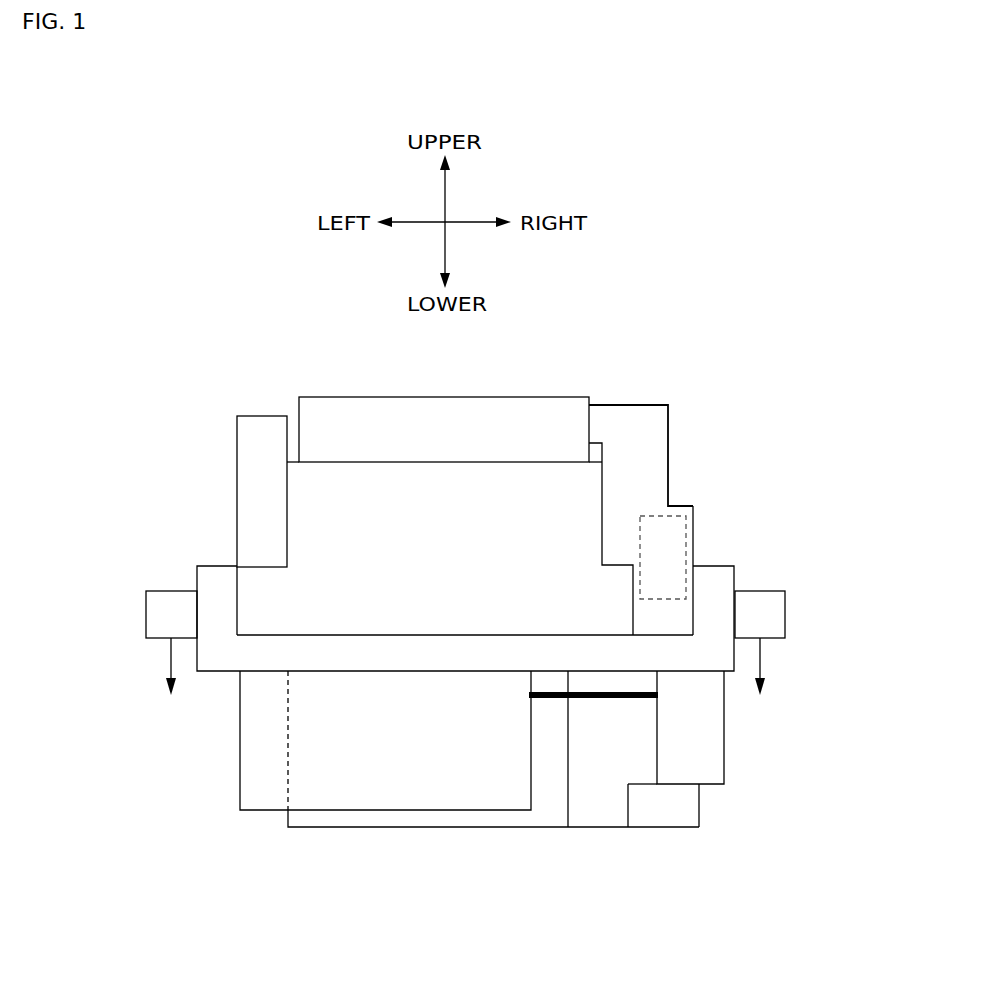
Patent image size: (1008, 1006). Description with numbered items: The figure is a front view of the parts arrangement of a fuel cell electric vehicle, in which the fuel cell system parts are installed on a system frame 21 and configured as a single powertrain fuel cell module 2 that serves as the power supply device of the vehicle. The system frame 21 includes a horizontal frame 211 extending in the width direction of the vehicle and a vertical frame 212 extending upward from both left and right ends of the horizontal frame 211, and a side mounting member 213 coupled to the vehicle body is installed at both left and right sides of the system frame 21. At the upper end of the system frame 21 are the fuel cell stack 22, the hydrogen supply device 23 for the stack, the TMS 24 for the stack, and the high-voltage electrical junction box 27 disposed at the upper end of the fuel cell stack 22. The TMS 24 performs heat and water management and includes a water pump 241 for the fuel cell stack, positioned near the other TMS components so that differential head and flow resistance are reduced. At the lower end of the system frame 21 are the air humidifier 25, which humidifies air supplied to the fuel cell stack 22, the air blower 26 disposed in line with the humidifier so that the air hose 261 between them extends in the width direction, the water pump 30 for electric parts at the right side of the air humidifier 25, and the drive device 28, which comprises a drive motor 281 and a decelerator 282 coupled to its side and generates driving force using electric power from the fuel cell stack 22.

The powertrain fuel cell module 2 is at (618, 380).
The system frame 21 is at (232, 857).
The horizontal frame 211 is at (278, 652).
The vertical frame 212 is at (220, 597).
The side mounting member 213 is at (162, 590).
The fuel cell stack 22 is at (555, 462).
The hydrogen supply device 23 is at (237, 445).
The TMS 24 is at (669, 428).
The water pump for a fuel cell stack 241 is at (680, 517).
The air humidifier 25 is at (332, 811).
The air blower 26 is at (727, 768).
The air hose 261 is at (551, 699).
The electrical junction box 27 is at (493, 396).
The drive device 28 is at (634, 897).
The drive motor 281 is at (543, 828).
The decelerator 282 is at (608, 828).
The water pump for electric parts 30 is at (660, 803).